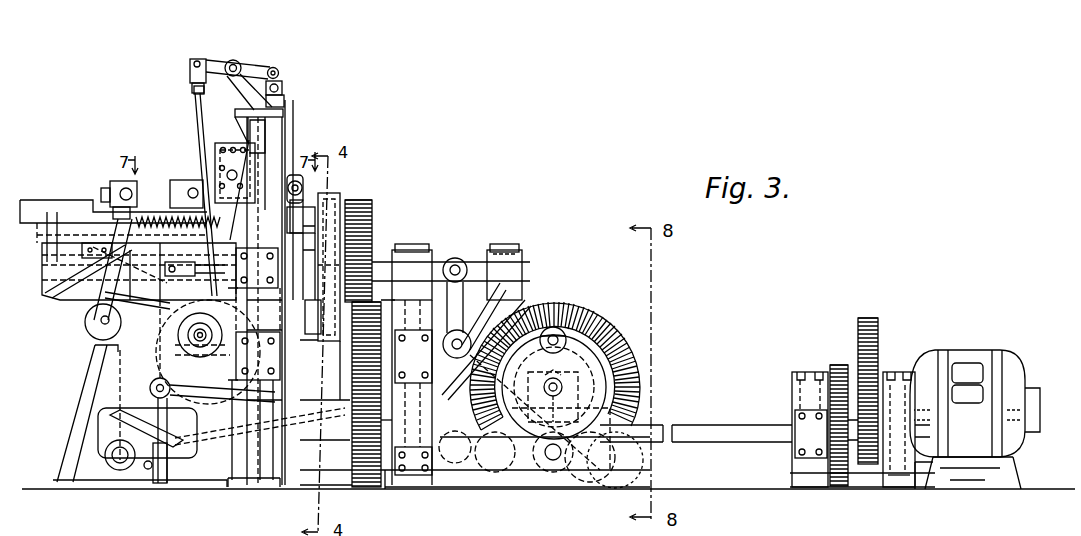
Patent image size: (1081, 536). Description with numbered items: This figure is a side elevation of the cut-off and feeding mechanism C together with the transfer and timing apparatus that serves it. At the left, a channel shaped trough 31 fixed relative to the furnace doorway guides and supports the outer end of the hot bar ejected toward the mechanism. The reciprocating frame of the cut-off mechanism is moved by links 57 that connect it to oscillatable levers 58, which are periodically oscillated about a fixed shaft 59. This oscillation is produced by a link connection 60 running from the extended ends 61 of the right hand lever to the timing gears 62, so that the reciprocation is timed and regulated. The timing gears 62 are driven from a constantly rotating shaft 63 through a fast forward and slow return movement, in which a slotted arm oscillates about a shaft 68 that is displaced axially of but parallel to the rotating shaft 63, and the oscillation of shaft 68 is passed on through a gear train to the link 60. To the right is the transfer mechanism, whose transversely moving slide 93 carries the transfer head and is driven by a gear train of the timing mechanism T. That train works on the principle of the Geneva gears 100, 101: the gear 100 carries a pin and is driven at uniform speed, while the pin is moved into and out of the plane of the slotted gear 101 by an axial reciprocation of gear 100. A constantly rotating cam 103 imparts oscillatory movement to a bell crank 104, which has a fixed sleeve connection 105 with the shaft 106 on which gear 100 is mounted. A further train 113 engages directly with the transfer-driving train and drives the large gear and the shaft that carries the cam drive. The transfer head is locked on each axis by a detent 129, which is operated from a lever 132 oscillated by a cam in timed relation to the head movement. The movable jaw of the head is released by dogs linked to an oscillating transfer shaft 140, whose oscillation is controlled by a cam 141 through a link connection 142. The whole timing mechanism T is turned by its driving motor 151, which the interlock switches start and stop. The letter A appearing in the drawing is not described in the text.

The channel shaped trough 31 is at (85, 210).
The links 57 is at (205, 182).
The oscillatable levers 58 is at (122, 182).
The fixed shaft 59 is at (100, 330).
The link connection 60 is at (185, 452).
The extended ends 61 is at (92, 398).
The timing gears 62 is at (555, 366).
The constantly rotating shaft 63 is at (620, 341).
The shaft 68 is at (548, 452).
The transversely moving slide 93 is at (300, 178).
The Geneva gear 100 is at (338, 195).
The slotted gear 101 is at (312, 205).
The cam 103 is at (640, 373).
The bell crank 104 is at (512, 345).
The fixed sleeve connection 105 is at (453, 258).
The shaft 106 is at (498, 252).
The gear train 113 is at (382, 484).
The detent 129 is at (373, 213).
The lever 132 is at (60, 290).
The transfer shaft 140 is at (238, 62).
The cam 141 is at (105, 292).
The link connection 142 is at (197, 104).
The driving motor 151 is at (1015, 358).
The shaft A is at (128, 462).
The cut-off and feeding mechanism C is at (148, 133).
The timing mechanism T is at (998, 325).